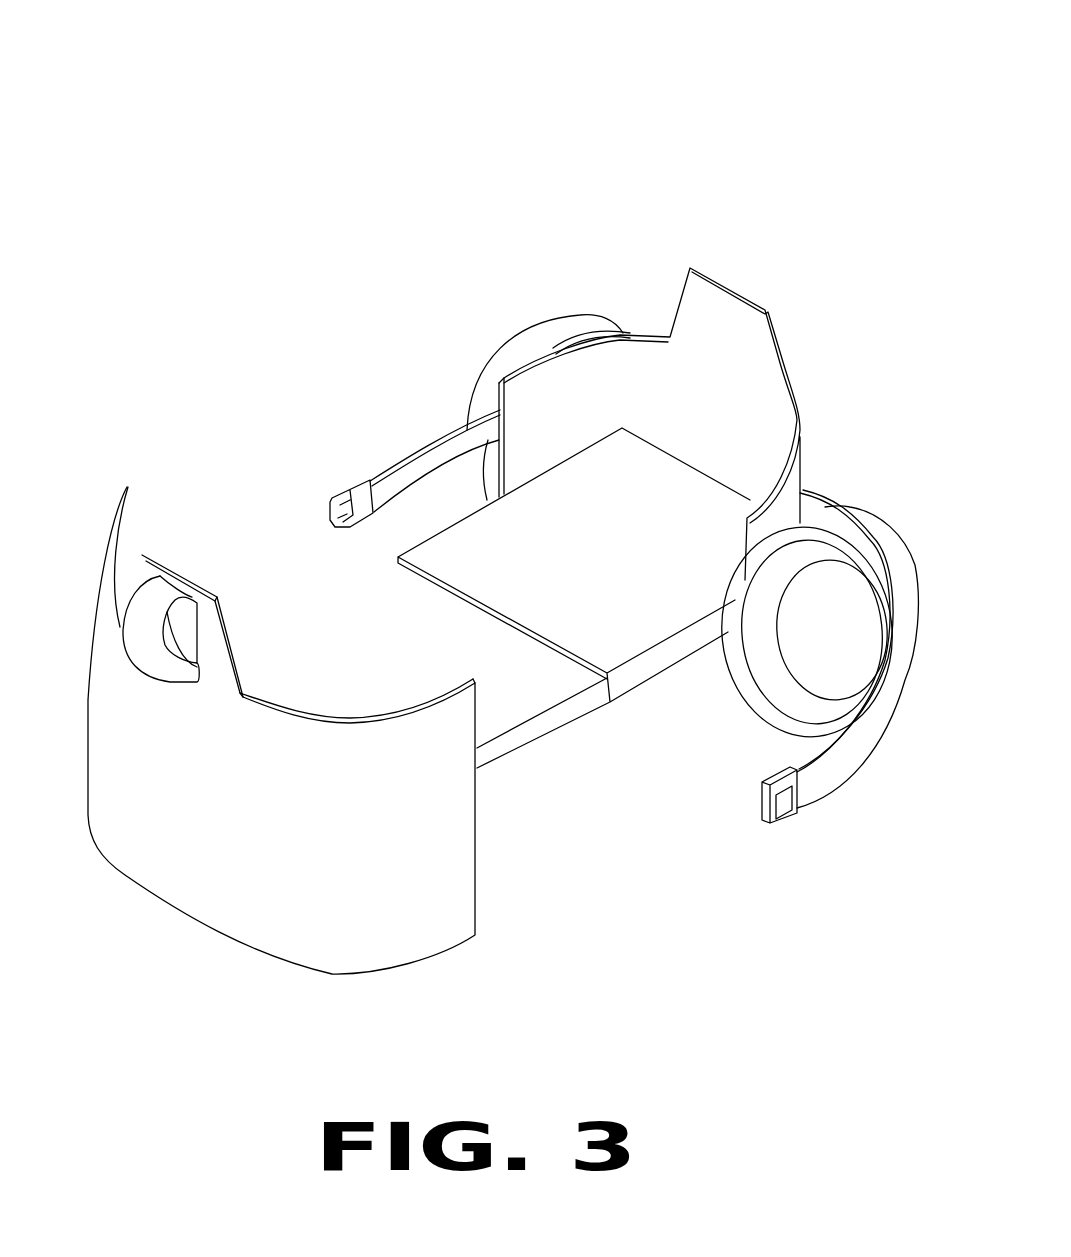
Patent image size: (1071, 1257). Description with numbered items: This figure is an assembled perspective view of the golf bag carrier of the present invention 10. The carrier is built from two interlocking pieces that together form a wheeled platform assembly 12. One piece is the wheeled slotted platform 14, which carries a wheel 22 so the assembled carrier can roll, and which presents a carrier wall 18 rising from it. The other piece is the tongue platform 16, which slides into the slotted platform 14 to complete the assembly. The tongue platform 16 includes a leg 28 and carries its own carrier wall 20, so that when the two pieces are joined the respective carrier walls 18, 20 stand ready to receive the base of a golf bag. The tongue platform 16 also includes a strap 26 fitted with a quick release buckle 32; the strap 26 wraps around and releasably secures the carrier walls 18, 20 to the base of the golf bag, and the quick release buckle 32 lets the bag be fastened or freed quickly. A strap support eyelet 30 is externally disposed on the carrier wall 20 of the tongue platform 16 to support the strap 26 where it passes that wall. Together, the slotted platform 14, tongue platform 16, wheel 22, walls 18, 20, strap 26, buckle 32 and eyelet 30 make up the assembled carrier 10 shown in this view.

The golf bag carrier 10 is at (822, 125).
The wheeled platform assembly 12 is at (320, 657).
The slotted platform 14 is at (657, 513).
The tongue platform 16 is at (267, 637).
The carrier wall 18 is at (707, 325).
The carrier wall 20 is at (277, 705).
The wheel 22 is at (732, 678).
The strap 26 is at (840, 780).
The leg 28 is at (372, 972).
The strap support eyelet 30 is at (174, 683).
The quick release buckle 32 is at (367, 475).